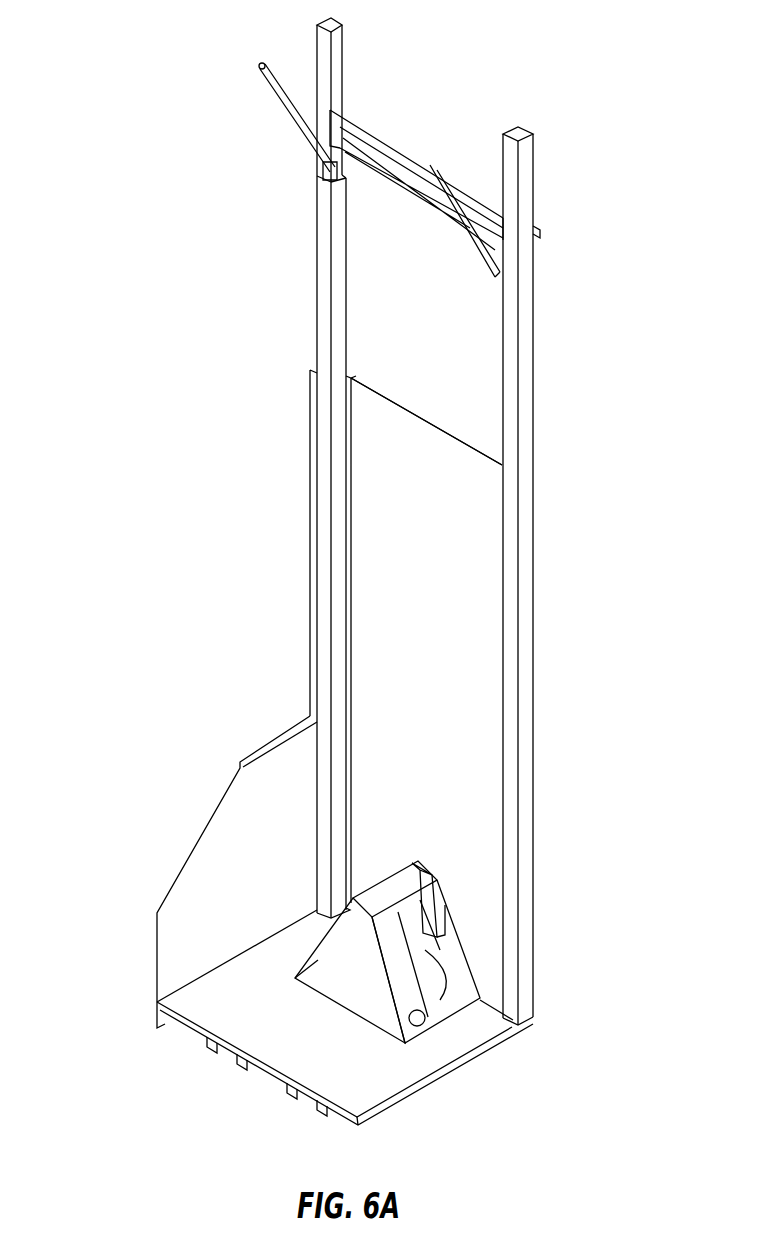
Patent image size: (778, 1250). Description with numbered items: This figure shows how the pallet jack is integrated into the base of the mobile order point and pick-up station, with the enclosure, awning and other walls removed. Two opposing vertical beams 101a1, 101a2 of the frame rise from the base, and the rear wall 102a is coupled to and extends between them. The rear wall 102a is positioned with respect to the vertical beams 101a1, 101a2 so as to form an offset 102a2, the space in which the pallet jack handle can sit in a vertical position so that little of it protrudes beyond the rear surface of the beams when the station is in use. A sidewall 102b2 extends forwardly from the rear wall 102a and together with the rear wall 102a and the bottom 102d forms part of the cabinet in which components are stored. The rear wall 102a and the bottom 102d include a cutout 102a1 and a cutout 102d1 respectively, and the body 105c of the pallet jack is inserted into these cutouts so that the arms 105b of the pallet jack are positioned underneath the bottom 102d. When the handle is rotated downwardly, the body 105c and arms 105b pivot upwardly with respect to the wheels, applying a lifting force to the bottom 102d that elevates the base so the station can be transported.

The vertical beam 101a1 is at (528, 285).
The vertical beam 101a2 is at (315, 335).
The offset 102a2 is at (356, 376).
The rear wall 102a is at (423, 603).
The sidewall 102b2 is at (215, 857).
The cutout 102a1 is at (455, 923).
The body 105c is at (345, 970).
The cutout 102d1 is at (467, 1013).
The arms 105b is at (280, 1082).
The bottom 102d is at (387, 1067).